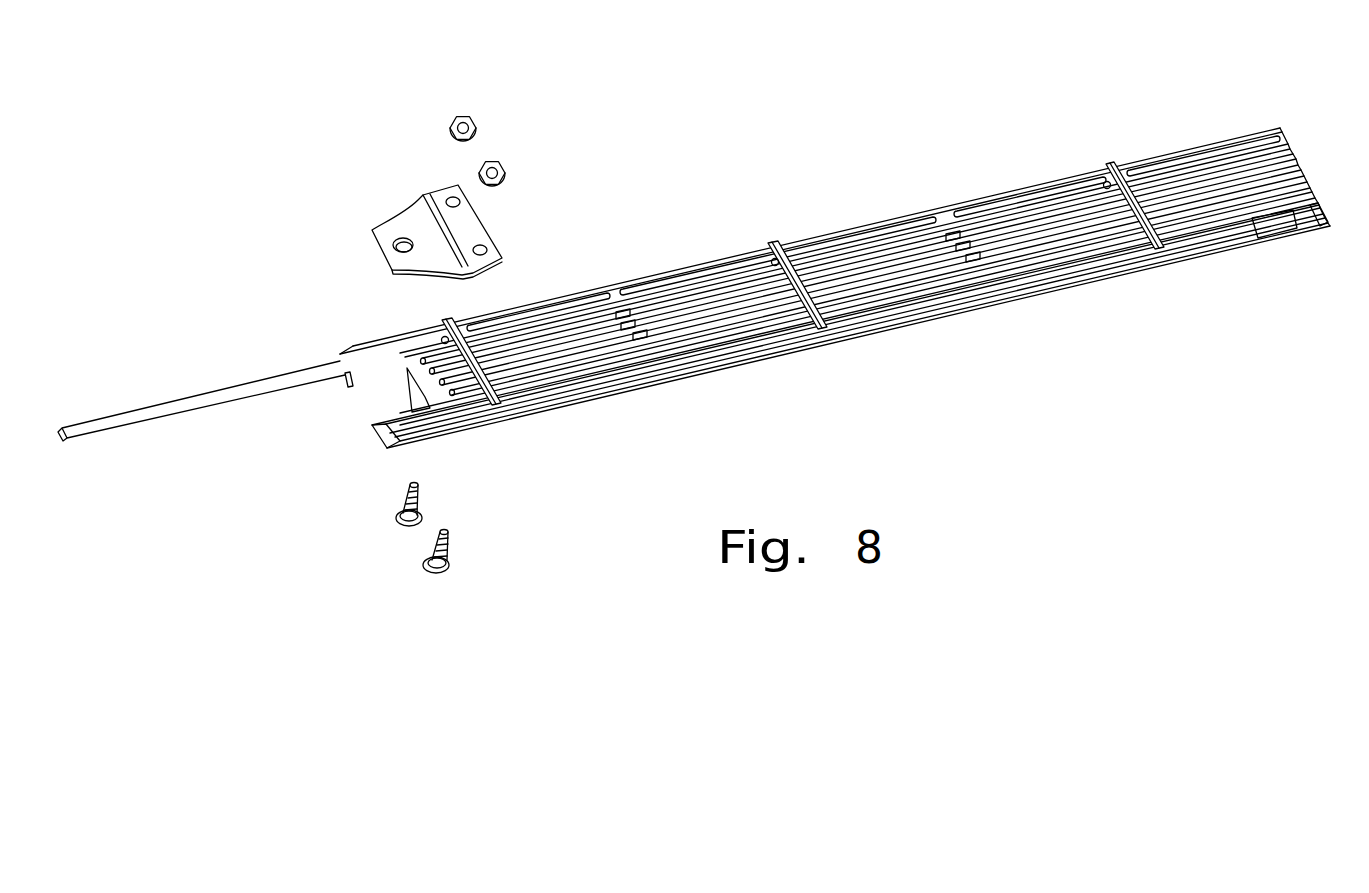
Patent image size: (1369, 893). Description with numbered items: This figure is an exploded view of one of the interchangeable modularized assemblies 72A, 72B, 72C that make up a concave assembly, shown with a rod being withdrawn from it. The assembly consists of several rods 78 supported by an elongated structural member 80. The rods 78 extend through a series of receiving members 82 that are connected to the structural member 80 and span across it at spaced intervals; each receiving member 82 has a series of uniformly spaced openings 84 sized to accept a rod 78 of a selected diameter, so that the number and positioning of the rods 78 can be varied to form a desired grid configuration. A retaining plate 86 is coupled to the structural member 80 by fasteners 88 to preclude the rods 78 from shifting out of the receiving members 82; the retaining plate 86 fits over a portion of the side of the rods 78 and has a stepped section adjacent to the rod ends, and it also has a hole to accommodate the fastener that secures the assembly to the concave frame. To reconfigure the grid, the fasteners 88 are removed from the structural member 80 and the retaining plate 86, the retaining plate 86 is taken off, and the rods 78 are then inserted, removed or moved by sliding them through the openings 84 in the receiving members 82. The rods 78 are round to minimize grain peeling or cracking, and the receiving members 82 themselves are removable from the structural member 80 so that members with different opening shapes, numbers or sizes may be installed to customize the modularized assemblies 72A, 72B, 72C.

The modularized assembly 72A is at (892, 120).
The modularized assembly 72B is at (892, 120).
The modularized assembly 72C is at (928, 180).
The rod 78 is at (195, 400).
The structural member 80 is at (985, 305).
The receiving member 82 is at (455, 320).
The opening 84 is at (445, 338).
The retaining plate 86 is at (402, 210).
The fastener 88 is at (428, 543).